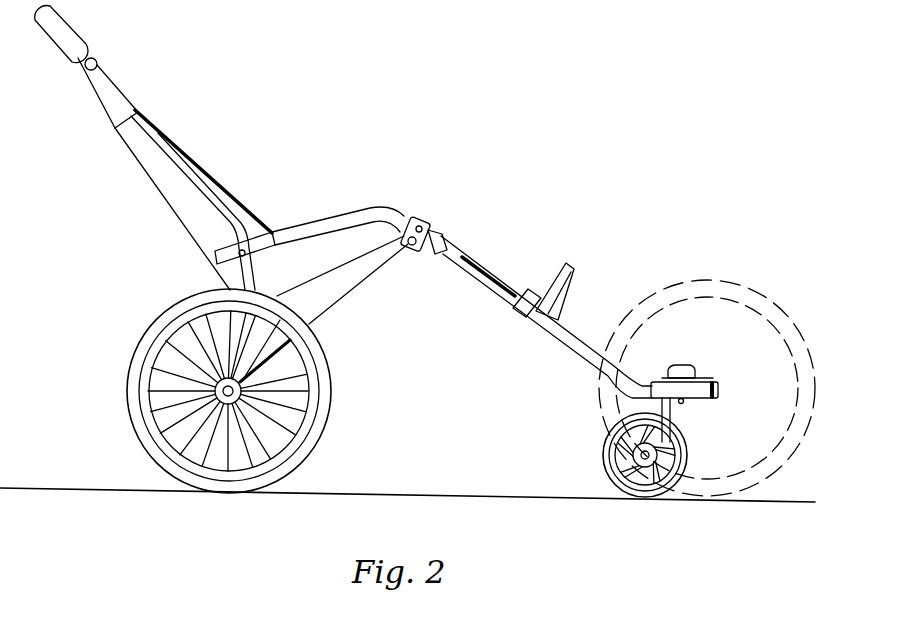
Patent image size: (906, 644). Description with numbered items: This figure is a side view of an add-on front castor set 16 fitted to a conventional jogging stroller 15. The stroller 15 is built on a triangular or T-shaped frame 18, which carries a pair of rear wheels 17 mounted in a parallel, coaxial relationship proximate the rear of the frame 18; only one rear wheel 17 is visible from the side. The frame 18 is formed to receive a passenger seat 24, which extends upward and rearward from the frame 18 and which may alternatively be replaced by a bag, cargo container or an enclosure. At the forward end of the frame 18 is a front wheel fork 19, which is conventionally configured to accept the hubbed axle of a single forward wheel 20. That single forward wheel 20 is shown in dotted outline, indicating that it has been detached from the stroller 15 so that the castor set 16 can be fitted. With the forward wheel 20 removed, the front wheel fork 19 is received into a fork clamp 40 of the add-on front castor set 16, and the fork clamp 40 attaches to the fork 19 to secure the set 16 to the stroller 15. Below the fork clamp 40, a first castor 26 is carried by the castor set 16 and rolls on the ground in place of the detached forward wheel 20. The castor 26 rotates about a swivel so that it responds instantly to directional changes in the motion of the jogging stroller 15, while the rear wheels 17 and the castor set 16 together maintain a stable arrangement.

The jogging stroller 15 is at (362, 159).
The add-on front castor set 16 is at (725, 435).
The rear wheels 17 is at (333, 397).
The frame 18 is at (363, 280).
The front wheel fork 19 is at (567, 342).
The single forward wheel 20 is at (730, 290).
The passenger seat 24 is at (177, 193).
The first castor 26 is at (602, 477).
The fork clamp 40 is at (703, 373).